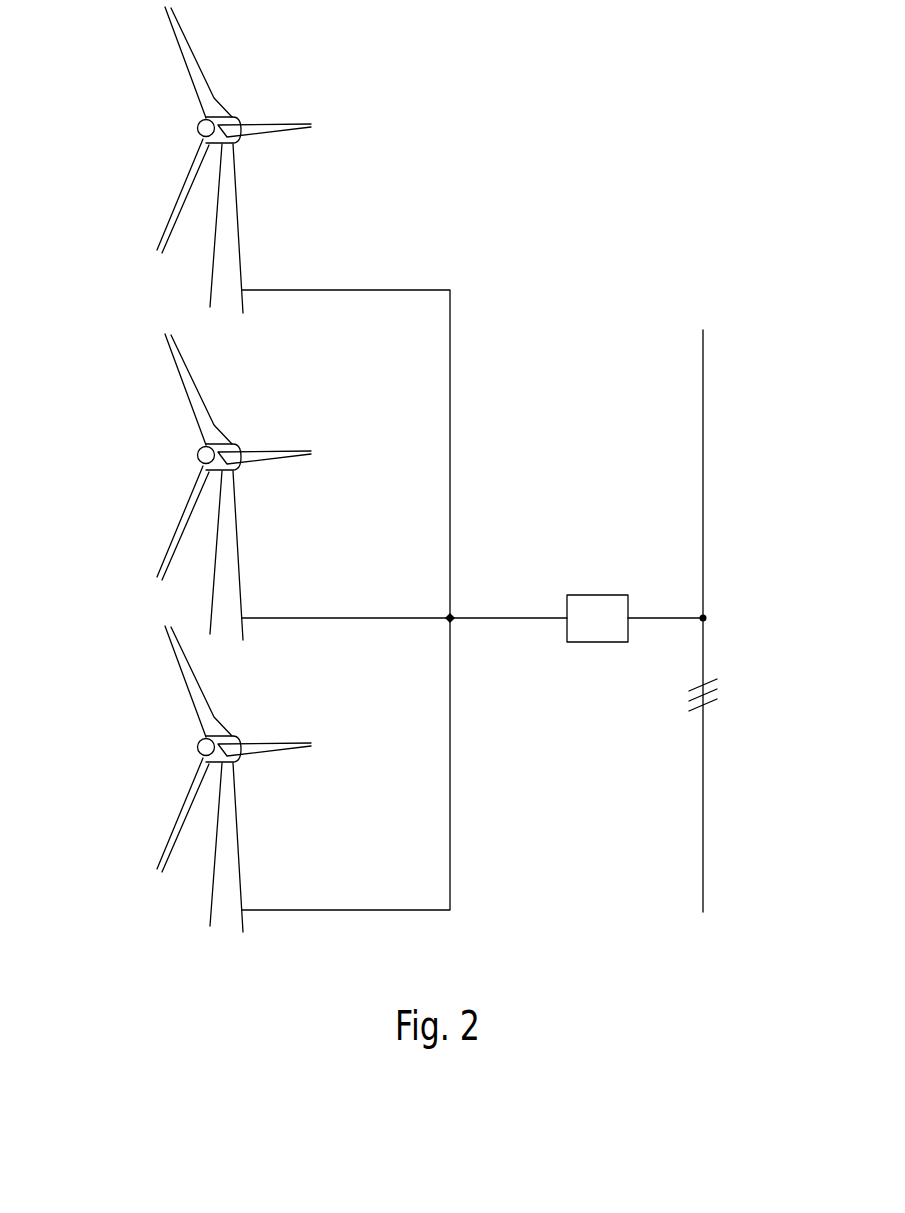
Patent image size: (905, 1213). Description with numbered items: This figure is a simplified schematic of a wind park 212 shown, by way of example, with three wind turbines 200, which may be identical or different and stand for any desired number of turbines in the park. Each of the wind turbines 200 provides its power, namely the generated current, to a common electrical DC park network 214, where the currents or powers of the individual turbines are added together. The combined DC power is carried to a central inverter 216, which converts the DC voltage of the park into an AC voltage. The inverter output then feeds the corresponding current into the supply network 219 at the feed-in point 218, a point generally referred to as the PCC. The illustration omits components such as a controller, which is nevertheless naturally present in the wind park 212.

The wind turbine 200 is at (232, 213).
The wind park 212 is at (522, 164).
The electrical DC park network 214 is at (472, 618).
The central inverter 216 is at (605, 577).
The feed-in point 218 is at (716, 596).
The supply network 219 is at (705, 357).